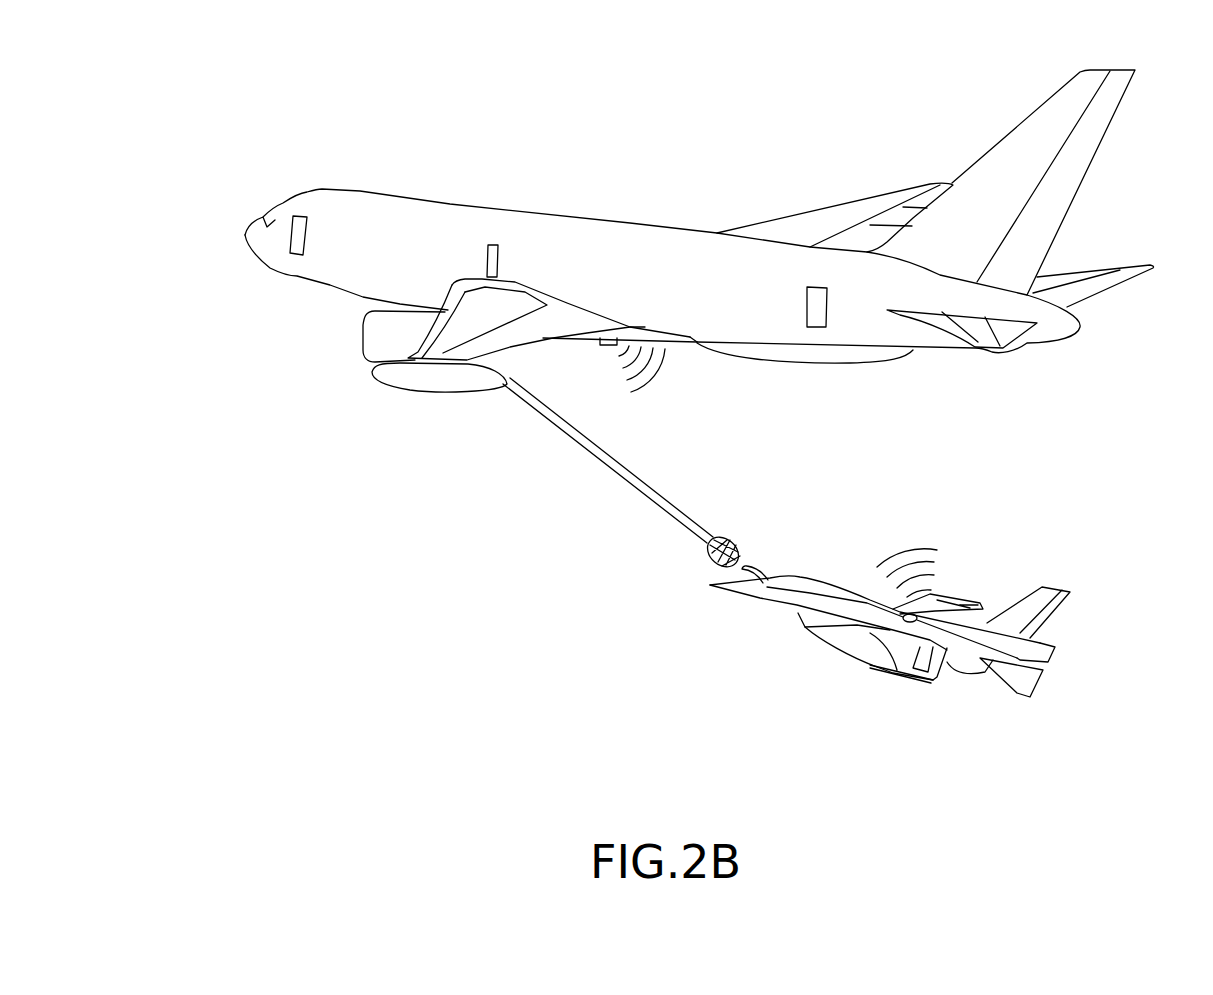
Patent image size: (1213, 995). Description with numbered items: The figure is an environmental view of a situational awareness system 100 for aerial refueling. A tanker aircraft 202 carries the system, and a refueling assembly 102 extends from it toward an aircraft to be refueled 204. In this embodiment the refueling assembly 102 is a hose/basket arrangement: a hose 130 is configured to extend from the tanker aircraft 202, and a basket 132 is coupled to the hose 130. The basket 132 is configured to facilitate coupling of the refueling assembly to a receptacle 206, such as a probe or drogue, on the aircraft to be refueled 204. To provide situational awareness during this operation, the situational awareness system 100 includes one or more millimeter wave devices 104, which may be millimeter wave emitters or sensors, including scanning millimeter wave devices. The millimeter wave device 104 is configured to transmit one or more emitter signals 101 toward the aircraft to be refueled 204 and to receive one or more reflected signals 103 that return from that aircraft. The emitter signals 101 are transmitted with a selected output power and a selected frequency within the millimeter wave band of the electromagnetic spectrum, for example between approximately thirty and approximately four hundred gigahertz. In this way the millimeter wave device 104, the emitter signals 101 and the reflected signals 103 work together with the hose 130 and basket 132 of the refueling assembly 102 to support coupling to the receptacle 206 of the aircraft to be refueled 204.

The situational awareness system 100 is at (287, 68).
The tanker aircraft 202 is at (322, 165).
The millimeter wave device 104 is at (605, 345).
The emitter signal 101 is at (668, 383).
The refueling assembly 102 is at (570, 523).
The hose 130 is at (590, 443).
The basket 132 is at (723, 537).
The aircraft to be refueled 204 is at (877, 693).
The receptacle 206 is at (760, 578).
The reflected signal 103 is at (938, 540).